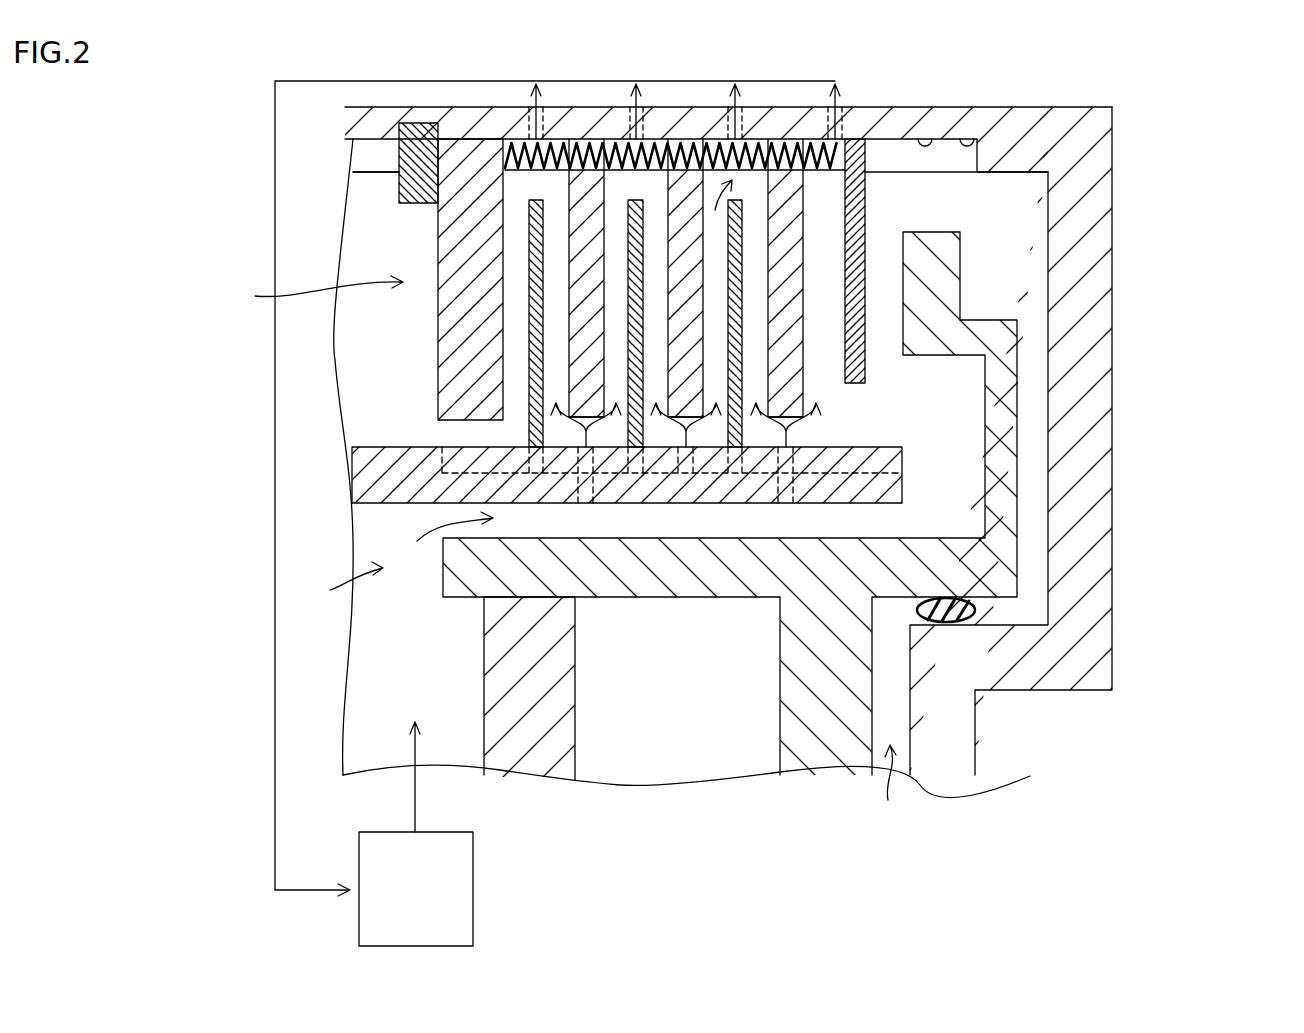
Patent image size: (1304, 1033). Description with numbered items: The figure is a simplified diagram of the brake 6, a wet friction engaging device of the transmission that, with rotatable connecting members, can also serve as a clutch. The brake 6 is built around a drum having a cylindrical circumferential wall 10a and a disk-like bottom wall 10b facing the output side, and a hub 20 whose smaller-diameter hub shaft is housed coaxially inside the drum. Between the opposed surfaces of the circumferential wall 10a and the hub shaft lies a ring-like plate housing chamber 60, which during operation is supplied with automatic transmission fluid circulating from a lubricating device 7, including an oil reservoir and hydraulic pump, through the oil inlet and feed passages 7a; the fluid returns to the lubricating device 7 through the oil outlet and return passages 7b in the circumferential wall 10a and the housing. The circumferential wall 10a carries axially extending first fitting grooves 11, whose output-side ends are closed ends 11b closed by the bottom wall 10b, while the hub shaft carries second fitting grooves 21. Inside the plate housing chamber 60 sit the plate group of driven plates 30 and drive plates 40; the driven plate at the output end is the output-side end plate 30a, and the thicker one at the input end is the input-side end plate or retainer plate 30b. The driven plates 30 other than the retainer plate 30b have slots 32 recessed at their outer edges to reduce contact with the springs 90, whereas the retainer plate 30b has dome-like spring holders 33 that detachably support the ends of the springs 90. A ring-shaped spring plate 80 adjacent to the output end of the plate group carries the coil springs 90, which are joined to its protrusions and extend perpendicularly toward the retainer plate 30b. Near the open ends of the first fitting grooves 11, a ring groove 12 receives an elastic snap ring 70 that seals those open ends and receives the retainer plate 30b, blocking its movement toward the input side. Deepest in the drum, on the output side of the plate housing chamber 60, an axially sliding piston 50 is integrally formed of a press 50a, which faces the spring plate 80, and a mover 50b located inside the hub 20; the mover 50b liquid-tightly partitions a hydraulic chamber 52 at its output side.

The brake 6 is at (1230, 70).
The lubricating device 7 is at (473, 895).
The oil inlet passage / oil feed passage 7a is at (585, 503).
The oil outlet passage / oil return passage 7b is at (305, 81).
The circumferential wall 10a is at (1040, 107).
The bottom wall 10b is at (1100, 415).
The first fitting grooves 11 is at (927, 139).
The closed ends 11b is at (968, 139).
The ring groove 12 is at (430, 123).
The hub 20 is at (875, 490).
The second fitting grooves 21 is at (890, 473).
The driven plates 30 is at (587, 323).
The output-side end plate 30a is at (786, 237).
The input-side end plate / retainer plate 30b is at (452, 240).
The slots 32 is at (685, 141).
The spring holders 33 is at (508, 143).
The drive plates 40 is at (538, 383).
The piston 50 is at (970, 254).
The press 50a is at (945, 295).
The mover 50b is at (826, 748).
The hydraulic chamber 52 is at (888, 800).
The plate housing chamber 60 is at (308, 294).
The snap ring 70 is at (399, 192).
The spring plate 80 is at (855, 375).
The springs 90 is at (757, 200).